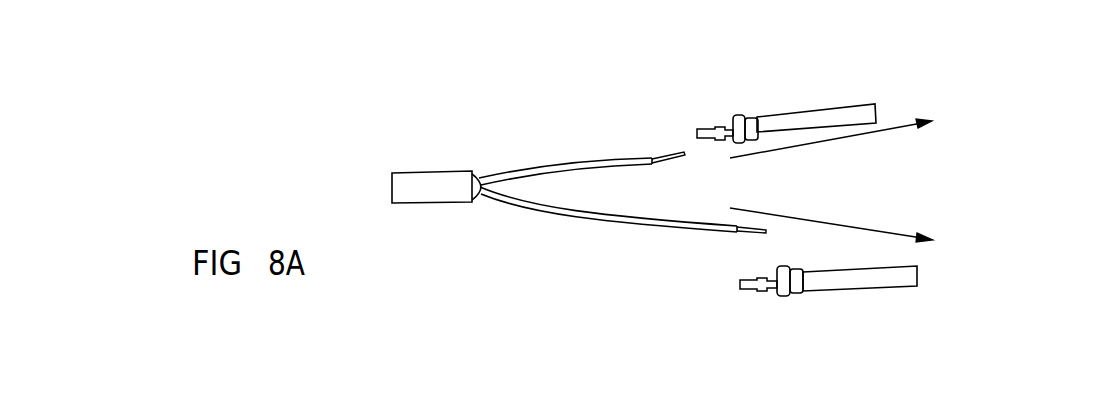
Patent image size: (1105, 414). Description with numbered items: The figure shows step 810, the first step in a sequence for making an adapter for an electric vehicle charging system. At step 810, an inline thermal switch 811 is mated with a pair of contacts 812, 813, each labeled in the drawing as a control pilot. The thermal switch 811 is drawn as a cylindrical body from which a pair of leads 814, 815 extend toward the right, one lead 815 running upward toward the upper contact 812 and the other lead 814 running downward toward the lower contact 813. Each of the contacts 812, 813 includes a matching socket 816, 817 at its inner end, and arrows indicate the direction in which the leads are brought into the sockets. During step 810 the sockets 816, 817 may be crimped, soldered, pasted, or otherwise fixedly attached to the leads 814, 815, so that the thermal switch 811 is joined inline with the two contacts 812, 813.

The step 810 is at (305, 81).
The inline thermal switch 811 is at (392, 184).
The contact 812 is at (887, 110).
The contact 813 is at (930, 276).
The lead 814 is at (520, 208).
The lead 815 is at (582, 166).
The socket 816 is at (740, 283).
The socket 817 is at (698, 127).